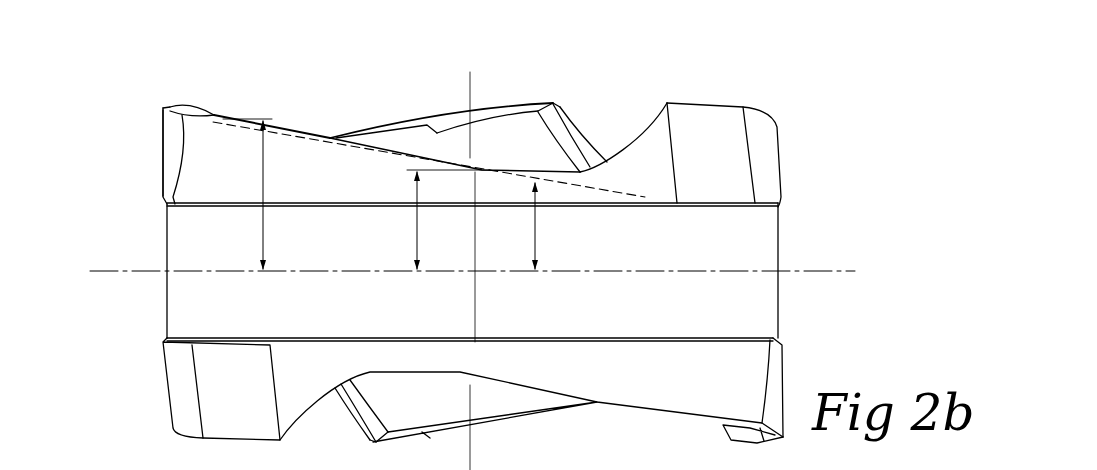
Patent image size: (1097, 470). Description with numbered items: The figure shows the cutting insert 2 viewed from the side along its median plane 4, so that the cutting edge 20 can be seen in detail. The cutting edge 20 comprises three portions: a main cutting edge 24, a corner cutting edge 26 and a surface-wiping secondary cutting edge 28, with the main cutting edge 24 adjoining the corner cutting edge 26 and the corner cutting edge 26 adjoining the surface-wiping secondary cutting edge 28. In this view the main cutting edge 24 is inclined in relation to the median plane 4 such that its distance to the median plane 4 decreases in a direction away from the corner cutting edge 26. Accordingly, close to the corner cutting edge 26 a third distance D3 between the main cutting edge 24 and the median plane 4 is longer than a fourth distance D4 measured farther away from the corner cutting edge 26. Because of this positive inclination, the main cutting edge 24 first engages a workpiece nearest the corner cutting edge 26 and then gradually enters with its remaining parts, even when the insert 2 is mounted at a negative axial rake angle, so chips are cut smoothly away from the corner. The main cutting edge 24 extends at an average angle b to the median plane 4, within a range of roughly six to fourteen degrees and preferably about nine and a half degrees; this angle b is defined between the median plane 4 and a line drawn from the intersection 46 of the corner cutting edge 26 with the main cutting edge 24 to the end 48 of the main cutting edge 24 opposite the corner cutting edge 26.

The cutting insert 2 is at (802, 131).
The median plane 4 is at (140, 270).
The cutting edge 20 is at (140, 103).
The main cutting edge 24 is at (334, 133).
The corner cutting edge 26 is at (164, 119).
The surface-wiping secondary cutting edge 28 is at (176, 103).
The intersection 46 is at (192, 107).
The end of the main cutting edge 48 is at (484, 167).
The third distance D3 is at (264, 196).
The fourth distance D4 is at (416, 230).
The average angle b is at (536, 229).